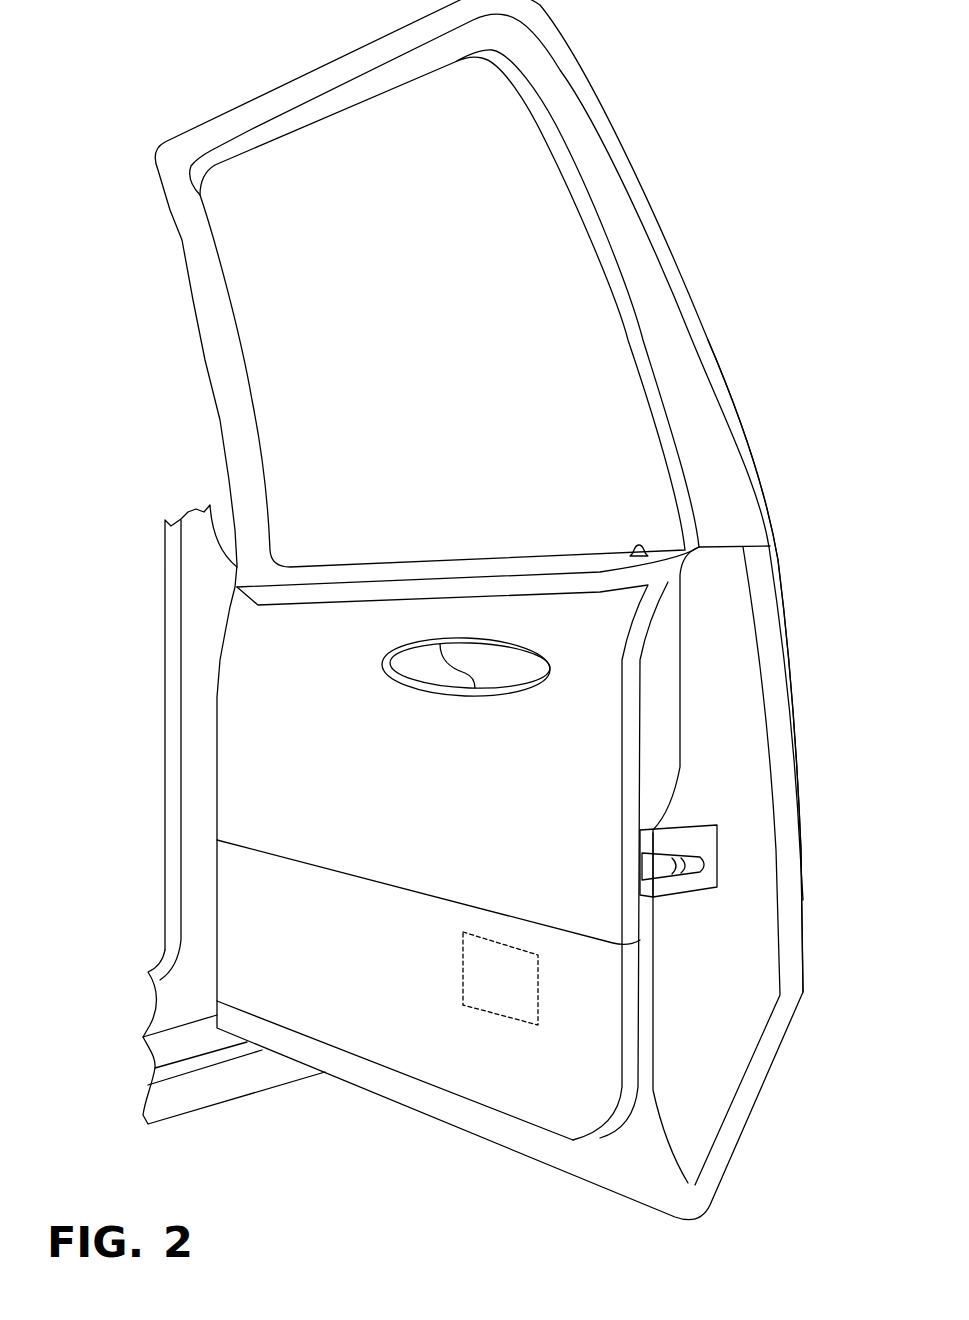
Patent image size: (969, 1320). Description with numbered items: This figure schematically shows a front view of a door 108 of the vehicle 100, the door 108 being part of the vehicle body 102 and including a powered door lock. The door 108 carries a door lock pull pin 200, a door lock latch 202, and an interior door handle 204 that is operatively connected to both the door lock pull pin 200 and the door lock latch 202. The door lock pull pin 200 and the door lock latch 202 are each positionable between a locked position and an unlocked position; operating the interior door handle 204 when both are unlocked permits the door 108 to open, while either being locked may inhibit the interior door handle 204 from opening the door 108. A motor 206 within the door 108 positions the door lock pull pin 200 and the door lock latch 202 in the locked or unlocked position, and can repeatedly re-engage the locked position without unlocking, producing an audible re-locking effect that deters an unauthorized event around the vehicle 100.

The vehicle 100 is at (78, 289).
The vehicle body 102 is at (144, 554).
The door 108 is at (793, 627).
The door lock pull pin 200 is at (640, 547).
The door lock latch 202 is at (717, 851).
The interior door handle 204 is at (427, 663).
The motor 206 is at (495, 1015).